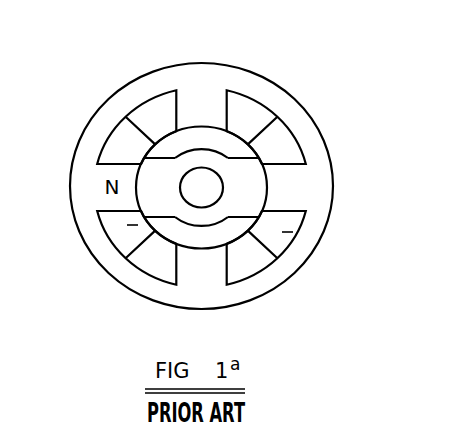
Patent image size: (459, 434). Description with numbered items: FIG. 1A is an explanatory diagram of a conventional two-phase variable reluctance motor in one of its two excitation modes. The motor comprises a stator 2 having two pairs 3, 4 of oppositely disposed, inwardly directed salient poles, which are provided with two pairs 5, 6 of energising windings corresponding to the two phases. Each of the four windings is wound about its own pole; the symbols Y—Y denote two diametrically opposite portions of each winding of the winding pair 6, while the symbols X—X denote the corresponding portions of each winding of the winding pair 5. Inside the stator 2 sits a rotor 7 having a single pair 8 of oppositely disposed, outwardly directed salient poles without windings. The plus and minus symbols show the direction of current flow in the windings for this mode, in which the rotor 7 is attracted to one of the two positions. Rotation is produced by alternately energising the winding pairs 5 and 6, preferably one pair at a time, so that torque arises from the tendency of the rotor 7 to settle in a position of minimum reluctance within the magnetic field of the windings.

The stator 2 is at (307, 283).
The pair of salient poles 3 is at (300, 187).
The pair of salient poles 4 is at (203, 270).
The pair of energising windings 5 is at (97, 162).
The pair of energising windings 6 is at (143, 265).
The rotor 7 is at (236, 143).
The single pair of salient poles 8 is at (242, 171).